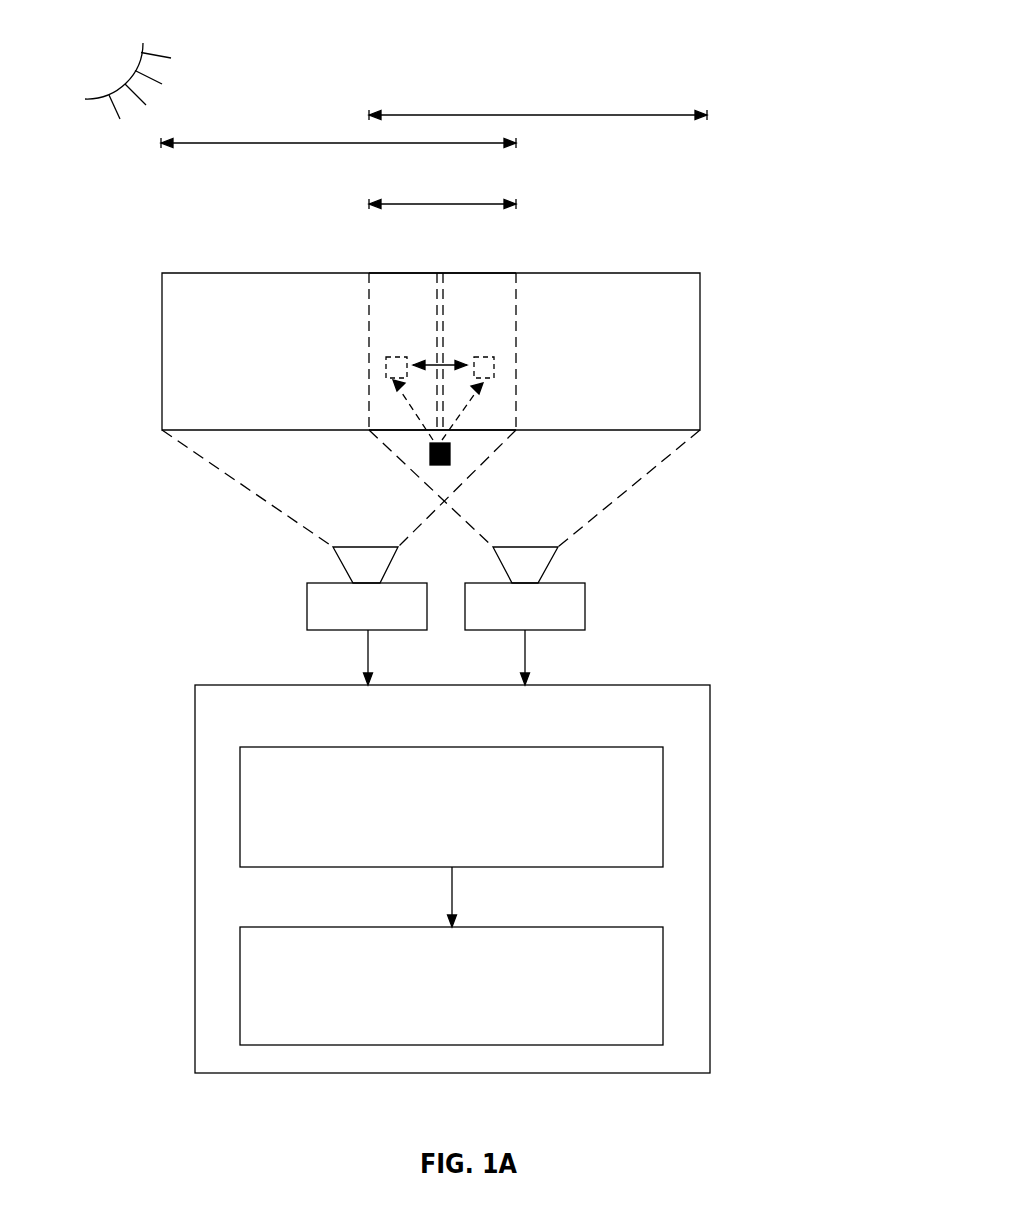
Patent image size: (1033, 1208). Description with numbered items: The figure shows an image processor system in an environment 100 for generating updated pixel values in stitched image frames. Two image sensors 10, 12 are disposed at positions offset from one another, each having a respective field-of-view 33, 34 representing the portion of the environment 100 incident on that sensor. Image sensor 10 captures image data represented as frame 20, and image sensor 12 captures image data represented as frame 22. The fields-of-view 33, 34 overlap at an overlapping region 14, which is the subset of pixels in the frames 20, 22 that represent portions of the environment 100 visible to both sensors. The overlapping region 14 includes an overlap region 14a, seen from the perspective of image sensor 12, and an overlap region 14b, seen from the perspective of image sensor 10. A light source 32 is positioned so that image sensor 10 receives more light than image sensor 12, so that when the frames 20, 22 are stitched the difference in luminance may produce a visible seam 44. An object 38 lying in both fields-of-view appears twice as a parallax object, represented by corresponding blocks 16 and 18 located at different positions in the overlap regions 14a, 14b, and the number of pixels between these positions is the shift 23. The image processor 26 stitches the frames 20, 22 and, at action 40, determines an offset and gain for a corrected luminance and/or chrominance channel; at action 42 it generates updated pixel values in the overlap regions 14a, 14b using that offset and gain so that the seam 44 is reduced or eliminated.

The light source 32 is at (106, 70).
The environment 100 is at (747, 95).
The frame 20 is at (122, 281).
The frame 22 is at (740, 322).
The overlapping region 14 is at (442, 190).
The overlap region 14a is at (393, 300).
The overlap region 14b is at (486, 302).
The seam 44 is at (444, 298).
The shift 23 is at (437, 363).
The block 16 is at (387, 357).
The block 18 is at (483, 355).
The object 38 is at (450, 447).
The field-of-view 33 is at (306, 501).
The field-of-view 34 is at (600, 484).
The image sensor 10 is at (307, 600).
The image sensor 12 is at (585, 600).
The image processor 26 is at (452, 879).
The action 40 is at (598, 747).
The action 42 is at (594, 927).